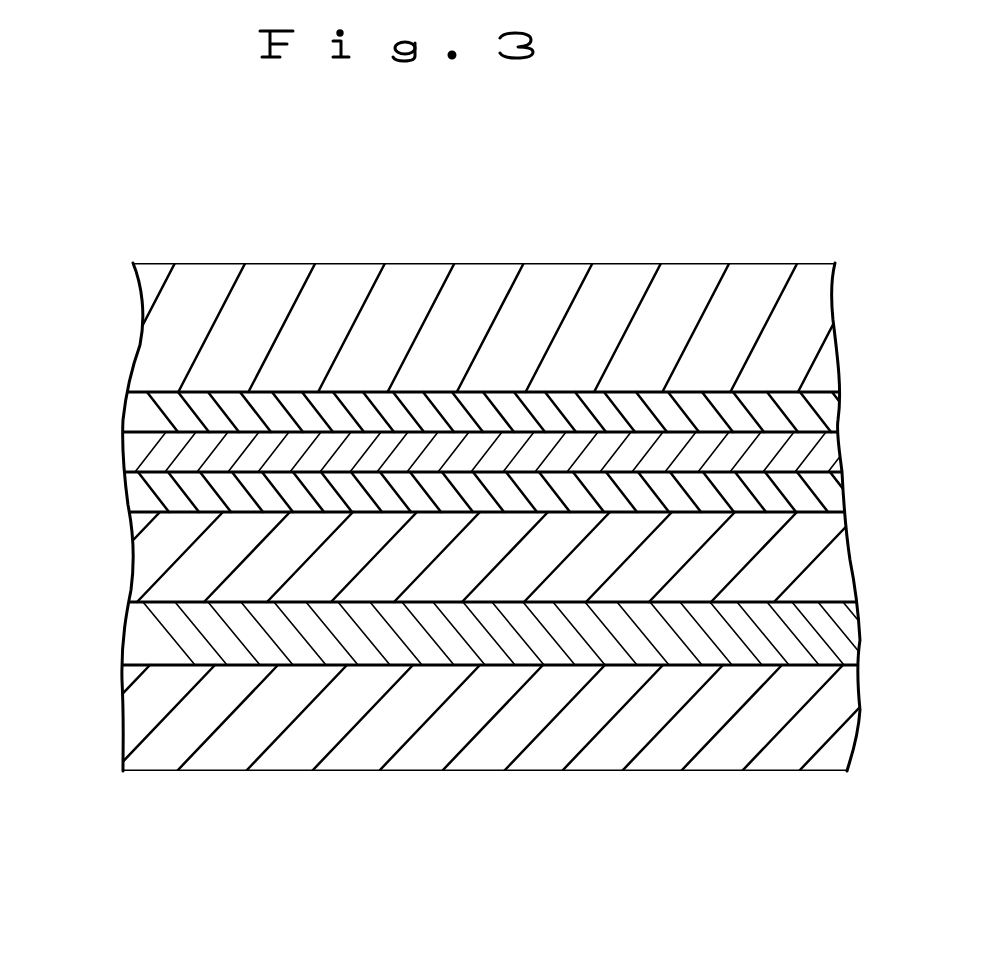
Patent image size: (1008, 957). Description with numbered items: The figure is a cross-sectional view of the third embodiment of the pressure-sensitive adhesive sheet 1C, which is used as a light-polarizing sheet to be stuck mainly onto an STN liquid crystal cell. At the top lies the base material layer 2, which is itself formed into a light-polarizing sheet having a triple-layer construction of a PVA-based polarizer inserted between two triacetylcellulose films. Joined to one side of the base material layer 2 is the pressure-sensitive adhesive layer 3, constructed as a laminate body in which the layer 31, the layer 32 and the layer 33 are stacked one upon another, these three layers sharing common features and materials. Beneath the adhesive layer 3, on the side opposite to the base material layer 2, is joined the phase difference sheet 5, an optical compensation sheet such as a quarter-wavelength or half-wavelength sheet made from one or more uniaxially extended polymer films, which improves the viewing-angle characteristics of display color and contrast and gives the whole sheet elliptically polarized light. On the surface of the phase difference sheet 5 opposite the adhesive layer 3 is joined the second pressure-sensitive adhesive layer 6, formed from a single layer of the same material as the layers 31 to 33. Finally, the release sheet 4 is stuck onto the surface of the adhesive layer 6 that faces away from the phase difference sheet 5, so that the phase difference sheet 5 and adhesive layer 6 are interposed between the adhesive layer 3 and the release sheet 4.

The pressure-sensitive adhesive sheet 1C is at (714, 216).
The base material layer 2 is at (790, 313).
The pressure-sensitive adhesive layer 3 is at (873, 385).
The layer 31 is at (153, 413).
The layer 32 is at (157, 452).
The layer 33 is at (153, 493).
The release sheet 4 is at (813, 722).
The phase difference sheet 5 is at (797, 556).
The pressure-sensitive adhesive layer 6 is at (810, 637).